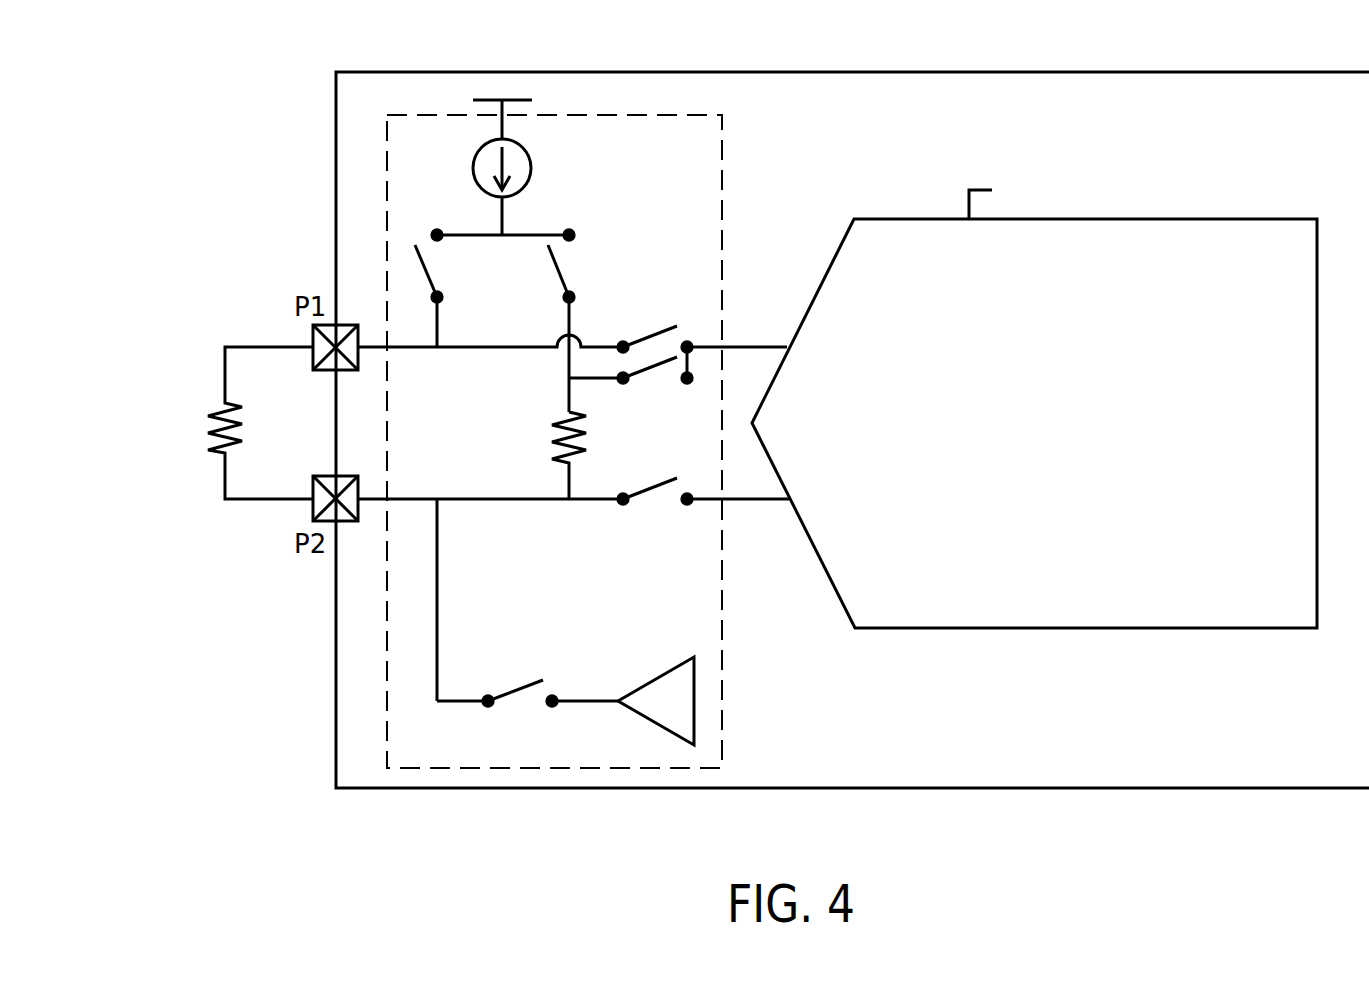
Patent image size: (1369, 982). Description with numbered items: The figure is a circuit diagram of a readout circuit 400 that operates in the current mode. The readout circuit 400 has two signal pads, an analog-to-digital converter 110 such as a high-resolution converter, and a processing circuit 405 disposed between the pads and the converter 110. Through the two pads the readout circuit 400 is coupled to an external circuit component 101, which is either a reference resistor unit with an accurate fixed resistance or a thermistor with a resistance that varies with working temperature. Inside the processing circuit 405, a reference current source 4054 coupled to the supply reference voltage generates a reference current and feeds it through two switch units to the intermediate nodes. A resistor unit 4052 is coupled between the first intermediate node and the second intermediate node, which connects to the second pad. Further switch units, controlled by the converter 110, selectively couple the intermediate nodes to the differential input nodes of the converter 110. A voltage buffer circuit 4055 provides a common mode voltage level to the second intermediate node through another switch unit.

The readout circuit 400 is at (825, 72).
The processing circuit 405 is at (722, 690).
The reference current source 4054 is at (472, 177).
The resistor unit 4052 is at (553, 428).
The voltage buffer circuit 4055 is at (644, 683).
The external circuit component 101 is at (200, 440).
The ADC 110 is at (1077, 631).